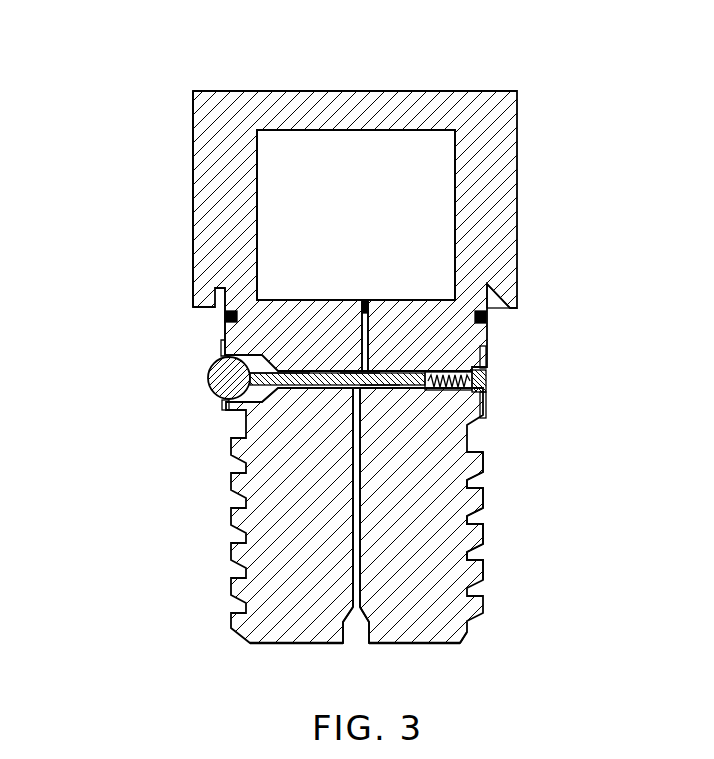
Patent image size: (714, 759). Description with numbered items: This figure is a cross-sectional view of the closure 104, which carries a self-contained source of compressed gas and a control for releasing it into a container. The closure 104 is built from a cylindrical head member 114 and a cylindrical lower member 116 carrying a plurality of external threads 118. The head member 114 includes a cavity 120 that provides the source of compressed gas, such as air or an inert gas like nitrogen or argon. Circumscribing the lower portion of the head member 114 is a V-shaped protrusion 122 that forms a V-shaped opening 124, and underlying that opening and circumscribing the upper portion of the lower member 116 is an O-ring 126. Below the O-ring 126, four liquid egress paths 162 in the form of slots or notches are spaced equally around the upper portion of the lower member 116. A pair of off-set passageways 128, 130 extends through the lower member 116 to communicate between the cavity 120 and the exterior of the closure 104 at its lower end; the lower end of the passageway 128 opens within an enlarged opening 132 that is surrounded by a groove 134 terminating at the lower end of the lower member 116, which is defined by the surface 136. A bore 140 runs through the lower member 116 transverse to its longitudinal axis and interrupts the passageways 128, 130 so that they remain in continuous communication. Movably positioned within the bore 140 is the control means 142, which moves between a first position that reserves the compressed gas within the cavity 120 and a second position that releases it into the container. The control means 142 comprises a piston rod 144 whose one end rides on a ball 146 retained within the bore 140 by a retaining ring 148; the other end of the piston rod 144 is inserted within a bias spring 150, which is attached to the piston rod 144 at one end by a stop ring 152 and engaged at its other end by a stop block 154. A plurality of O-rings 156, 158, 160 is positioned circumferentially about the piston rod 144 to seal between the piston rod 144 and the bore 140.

The closure 104 is at (518, 180).
The head member 114 is at (208, 197).
The cavity 120 is at (407, 168).
The V-shaped protrusion 122 is at (510, 290).
The V-shaped opening 124 is at (490, 314).
The O-ring 126 is at (225, 316).
The passageway 130 is at (366, 302).
The piston rod 144 is at (312, 375).
The O-ring 156 is at (296, 373).
The O-ring 158 is at (358, 373).
The O-ring 160 is at (380, 375).
The stop ring 152 is at (420, 375).
The stop block 154 is at (485, 372).
The bias spring 150 is at (487, 352).
The liquid egress paths 162 is at (223, 338).
The retaining ring 148 is at (221, 353).
The control means 142 is at (208, 378).
The ball 146 is at (215, 391).
The bore 140 is at (238, 406).
The lower member 116 is at (432, 481).
The external threads 118 is at (486, 558).
The passageway 128 is at (352, 450).
The enlarged opening 132 is at (354, 632).
The groove 134 is at (380, 645).
The surface 136 is at (425, 645).